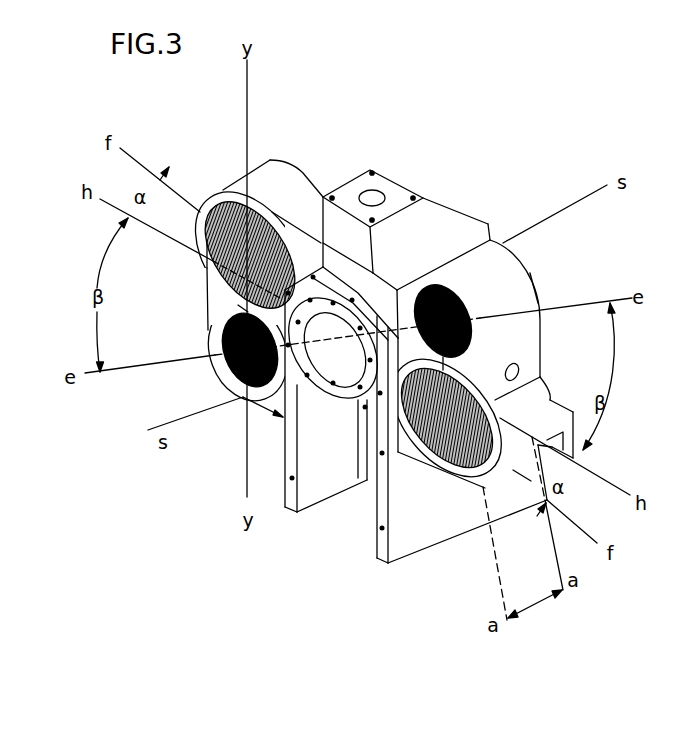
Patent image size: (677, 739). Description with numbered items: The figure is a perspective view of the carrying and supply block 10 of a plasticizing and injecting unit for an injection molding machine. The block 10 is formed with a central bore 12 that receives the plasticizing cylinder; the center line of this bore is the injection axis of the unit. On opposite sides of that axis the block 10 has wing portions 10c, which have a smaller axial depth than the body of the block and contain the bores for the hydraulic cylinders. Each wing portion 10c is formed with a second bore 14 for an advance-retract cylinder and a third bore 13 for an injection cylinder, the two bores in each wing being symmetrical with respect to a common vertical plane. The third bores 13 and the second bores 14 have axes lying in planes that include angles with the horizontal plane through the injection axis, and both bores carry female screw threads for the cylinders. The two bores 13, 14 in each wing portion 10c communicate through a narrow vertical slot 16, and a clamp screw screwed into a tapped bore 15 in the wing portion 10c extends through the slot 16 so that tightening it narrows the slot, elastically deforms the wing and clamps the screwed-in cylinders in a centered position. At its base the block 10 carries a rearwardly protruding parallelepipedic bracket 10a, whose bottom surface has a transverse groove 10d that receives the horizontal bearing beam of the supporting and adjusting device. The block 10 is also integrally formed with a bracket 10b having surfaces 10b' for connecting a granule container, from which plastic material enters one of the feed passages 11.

The carrying and supply block 10 is at (348, 172).
The parallelepipedic bracket 10a is at (572, 437).
The bracket 10b is at (405, 218).
The connection surfaces 10b' is at (443, 199).
The wing portion 10c is at (303, 173).
The transverse groove 10d is at (545, 452).
The feed passage 11 is at (373, 190).
The bore 12 is at (340, 350).
The third bore 13 is at (212, 202).
The second bore 14 is at (223, 337).
The tapped bore 15 is at (518, 372).
The narrow vertical slot 16 is at (243, 307).